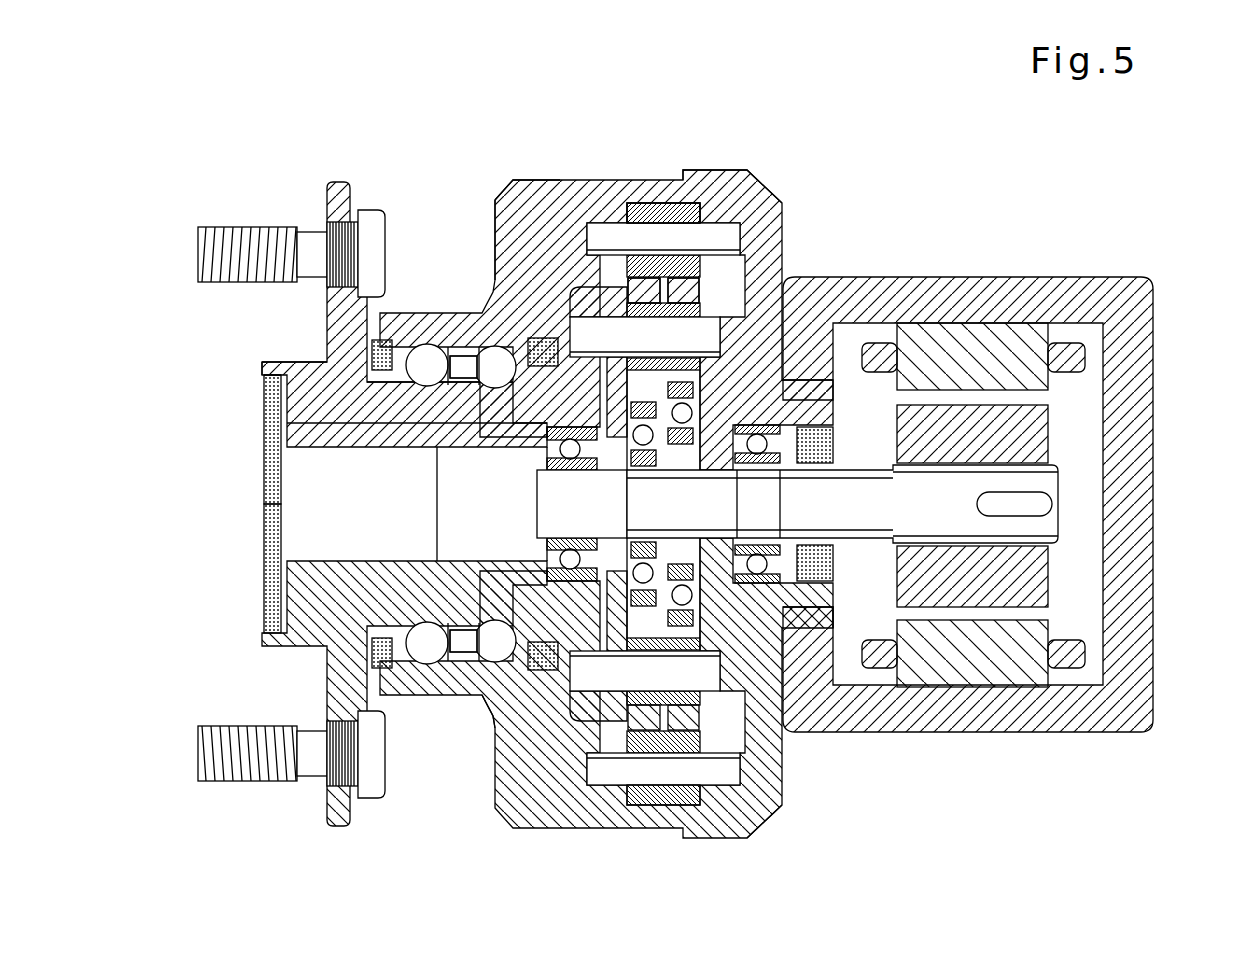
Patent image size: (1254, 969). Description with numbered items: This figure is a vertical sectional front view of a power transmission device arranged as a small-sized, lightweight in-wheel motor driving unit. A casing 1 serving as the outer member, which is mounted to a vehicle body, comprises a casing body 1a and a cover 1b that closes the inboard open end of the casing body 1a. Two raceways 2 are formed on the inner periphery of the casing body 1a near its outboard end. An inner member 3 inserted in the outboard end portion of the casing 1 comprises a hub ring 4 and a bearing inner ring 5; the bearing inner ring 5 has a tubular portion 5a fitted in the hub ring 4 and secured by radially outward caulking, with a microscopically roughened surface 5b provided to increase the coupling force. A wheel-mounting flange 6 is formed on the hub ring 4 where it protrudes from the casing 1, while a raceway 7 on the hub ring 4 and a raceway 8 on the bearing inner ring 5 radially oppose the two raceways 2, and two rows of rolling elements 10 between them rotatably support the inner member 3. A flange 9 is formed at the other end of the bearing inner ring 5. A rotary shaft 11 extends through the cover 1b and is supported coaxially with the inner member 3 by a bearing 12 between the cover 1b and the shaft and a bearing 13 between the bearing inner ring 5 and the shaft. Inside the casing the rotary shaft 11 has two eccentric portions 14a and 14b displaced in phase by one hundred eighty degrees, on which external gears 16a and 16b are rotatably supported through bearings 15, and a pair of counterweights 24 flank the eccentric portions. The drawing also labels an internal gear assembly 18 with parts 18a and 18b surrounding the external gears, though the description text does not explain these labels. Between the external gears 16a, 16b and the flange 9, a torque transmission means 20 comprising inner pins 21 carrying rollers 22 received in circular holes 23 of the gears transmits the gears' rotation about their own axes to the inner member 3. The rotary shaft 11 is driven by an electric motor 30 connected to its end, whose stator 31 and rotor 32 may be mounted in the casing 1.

The casing 1 is at (600, 178).
The casing body 1a is at (500, 215).
The cover 1b is at (702, 195).
The raceways 2 is at (492, 346).
The inner member 3 is at (262, 362).
The hub ring 4 is at (313, 373).
The bearing inner ring 5 is at (513, 270).
The tubular portion 5a is at (303, 447).
The microscopically roughened surface 5b is at (300, 408).
The wheel-mounting flange 6 is at (327, 197).
The raceway 7 is at (428, 392).
The raceway 8 is at (540, 405).
The flange 9 is at (568, 430).
The rolling elements 10 is at (478, 392).
The rotary shaft 11 is at (1037, 482).
The bearing 12 is at (795, 605).
The bearing 13 is at (515, 690).
The eccentric portion 14a is at (643, 780).
The eccentric portion 14b is at (595, 777).
The bearings 15 is at (830, 443).
The external gear 16a is at (667, 783).
The external gear 16b is at (587, 297).
The bearing 18 is at (640, 203).
The outer ring 18a is at (690, 235).
The inner ring 18b is at (660, 215).
The torque transmission means 20 is at (706, 270).
The inner pins 21 is at (750, 280).
The rollers 22 is at (782, 380).
The circular holes 23 is at (712, 205).
The counterweights 24 is at (545, 300).
The electric motor 30 is at (1045, 272).
The stator 31 is at (972, 335).
The rotor 32 is at (1033, 428).